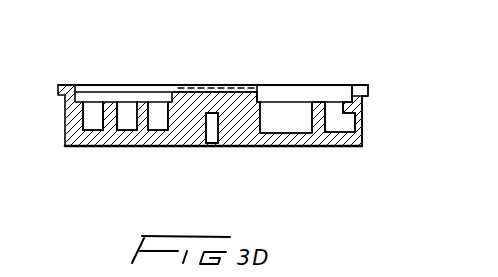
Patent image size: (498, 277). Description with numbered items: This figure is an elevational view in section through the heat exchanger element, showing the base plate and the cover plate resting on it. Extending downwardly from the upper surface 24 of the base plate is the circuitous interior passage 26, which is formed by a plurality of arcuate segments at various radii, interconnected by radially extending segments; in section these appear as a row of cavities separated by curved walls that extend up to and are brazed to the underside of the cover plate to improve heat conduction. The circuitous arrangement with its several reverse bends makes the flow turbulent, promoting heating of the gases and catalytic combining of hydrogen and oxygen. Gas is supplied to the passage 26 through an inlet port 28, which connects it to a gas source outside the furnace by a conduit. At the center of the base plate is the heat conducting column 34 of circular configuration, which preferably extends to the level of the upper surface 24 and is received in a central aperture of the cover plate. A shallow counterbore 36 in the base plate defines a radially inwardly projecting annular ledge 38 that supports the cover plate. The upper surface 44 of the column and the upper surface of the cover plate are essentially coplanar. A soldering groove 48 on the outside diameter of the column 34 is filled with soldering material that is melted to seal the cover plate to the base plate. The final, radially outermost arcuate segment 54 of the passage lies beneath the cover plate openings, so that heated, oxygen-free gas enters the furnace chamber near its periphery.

The upper surface 24 is at (363, 85).
The circuitous interior passage 26 is at (157, 112).
The inlet port 28 is at (363, 127).
The heat conducting column 34 is at (258, 123).
The counterbore 36 is at (88, 84).
The annular ledge 38 is at (352, 85).
The upper surface of the column 44 is at (188, 88).
The soldering groove 48 is at (257, 85).
The radially outermost arcuate segment 54 is at (93, 130).